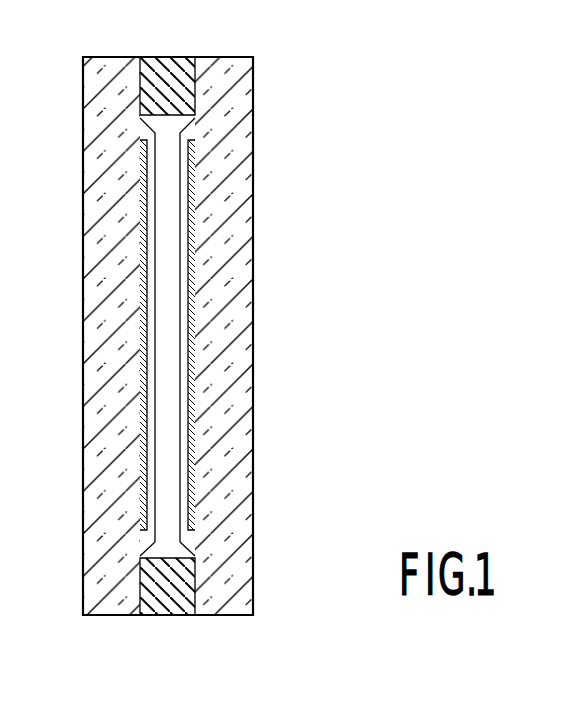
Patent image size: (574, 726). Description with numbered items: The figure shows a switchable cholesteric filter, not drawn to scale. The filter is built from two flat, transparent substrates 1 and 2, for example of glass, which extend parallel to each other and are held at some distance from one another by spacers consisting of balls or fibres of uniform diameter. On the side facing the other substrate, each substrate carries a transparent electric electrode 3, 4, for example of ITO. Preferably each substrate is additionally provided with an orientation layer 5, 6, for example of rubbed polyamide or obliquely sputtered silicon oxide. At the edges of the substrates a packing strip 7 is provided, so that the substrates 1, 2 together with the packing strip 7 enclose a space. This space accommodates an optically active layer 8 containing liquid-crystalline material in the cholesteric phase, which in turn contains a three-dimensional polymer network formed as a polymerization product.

The substrate 1 is at (230, 142).
The substrate 2 is at (97, 133).
The transparent electric electrode 3 is at (140, 215).
The transparent electric electrode 4 is at (197, 217).
The orientation layer 5 is at (143, 543).
The orientation layer 6 is at (197, 548).
The packing strip 7 is at (157, 77).
The optically active layer 8 is at (170, 130).